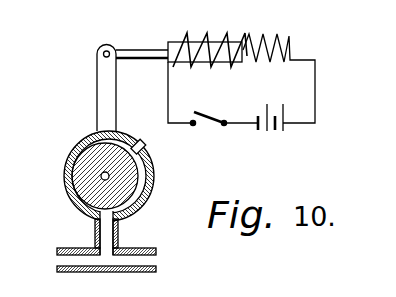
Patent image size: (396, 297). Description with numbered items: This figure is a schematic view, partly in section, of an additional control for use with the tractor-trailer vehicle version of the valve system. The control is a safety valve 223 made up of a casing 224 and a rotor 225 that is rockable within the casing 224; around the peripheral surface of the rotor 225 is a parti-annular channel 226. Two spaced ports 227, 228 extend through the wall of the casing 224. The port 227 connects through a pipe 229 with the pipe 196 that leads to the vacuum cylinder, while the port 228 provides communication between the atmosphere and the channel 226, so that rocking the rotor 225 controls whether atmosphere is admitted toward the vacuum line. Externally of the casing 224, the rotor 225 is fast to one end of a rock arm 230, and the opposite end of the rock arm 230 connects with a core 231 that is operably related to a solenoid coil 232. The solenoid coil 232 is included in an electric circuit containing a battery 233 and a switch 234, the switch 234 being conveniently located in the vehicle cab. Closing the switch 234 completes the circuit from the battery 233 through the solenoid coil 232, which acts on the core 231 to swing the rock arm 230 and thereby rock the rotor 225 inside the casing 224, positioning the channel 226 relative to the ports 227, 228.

The pipe 196 is at (84, 273).
The safety valve 223 is at (83, 130).
The casing 224 is at (72, 182).
The rotor 225 is at (78, 190).
The parti-annular channel 226 is at (142, 202).
The port 227 is at (84, 213).
The port 228 is at (144, 156).
The pipe 229 is at (111, 233).
The rock arm 230 is at (97, 72).
The core 231 is at (170, 44).
The solenoid coil 232 is at (198, 37).
The battery 233 is at (275, 97).
The switch 234 is at (210, 111).